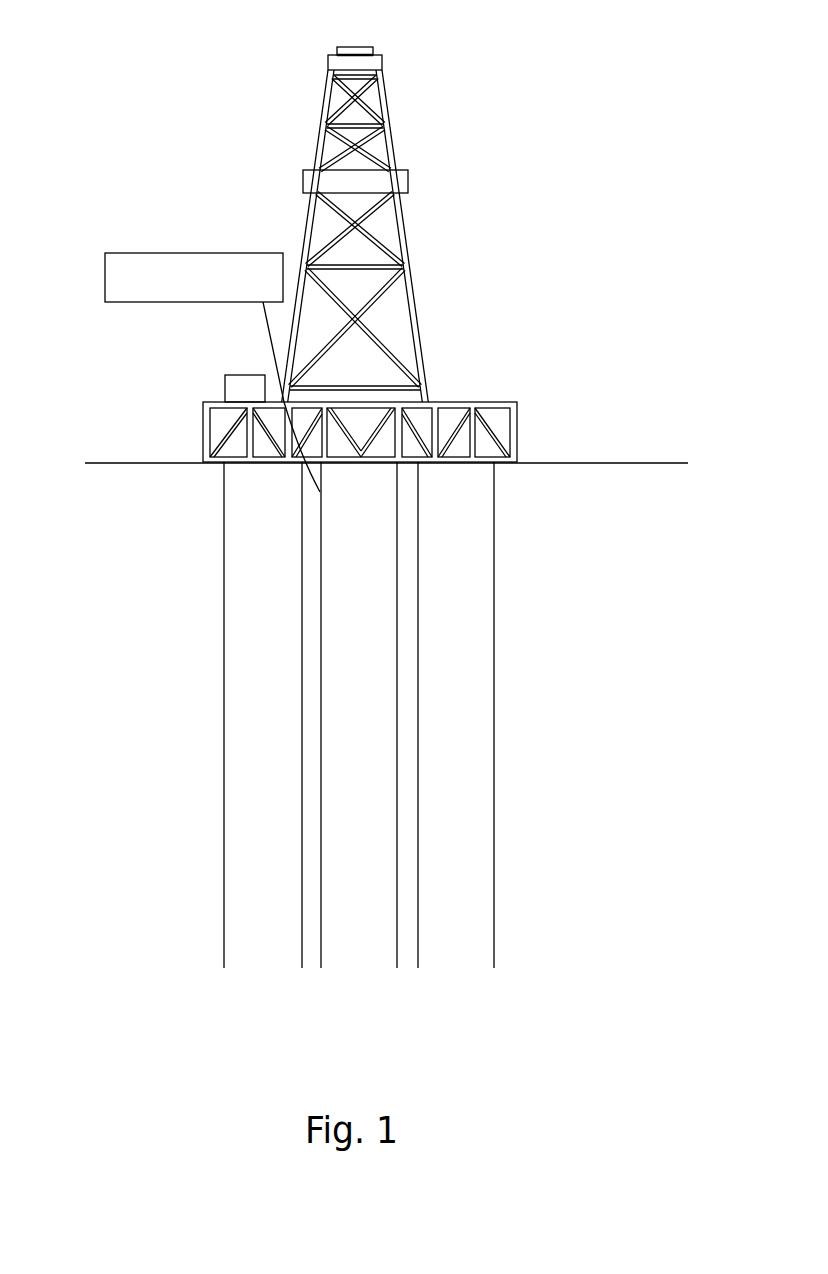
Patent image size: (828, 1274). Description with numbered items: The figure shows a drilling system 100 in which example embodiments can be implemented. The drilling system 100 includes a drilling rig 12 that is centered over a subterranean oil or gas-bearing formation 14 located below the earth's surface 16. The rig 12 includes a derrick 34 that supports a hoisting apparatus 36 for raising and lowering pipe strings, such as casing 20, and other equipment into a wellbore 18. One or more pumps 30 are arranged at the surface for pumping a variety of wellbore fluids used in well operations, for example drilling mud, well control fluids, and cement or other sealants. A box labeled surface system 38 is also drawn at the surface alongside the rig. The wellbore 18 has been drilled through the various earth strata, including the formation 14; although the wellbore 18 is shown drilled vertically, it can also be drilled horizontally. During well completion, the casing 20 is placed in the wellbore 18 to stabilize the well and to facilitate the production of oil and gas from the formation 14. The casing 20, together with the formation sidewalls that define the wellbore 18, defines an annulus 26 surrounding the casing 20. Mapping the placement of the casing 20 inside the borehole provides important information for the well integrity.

The drilling system 100 is at (133, 70).
The drilling rig 12 is at (520, 428).
The subterranean oil or gas-bearing formation 14 is at (457, 768).
The earth's surface 16 is at (603, 462).
The wellbore 18 is at (417, 528).
The casing 20 is at (398, 587).
The annulus 26 is at (405, 962).
The pumps 30 is at (243, 375).
The derrick 34 is at (392, 112).
The hoisting apparatus 36 is at (353, 382).
The surface system 38 is at (183, 253).